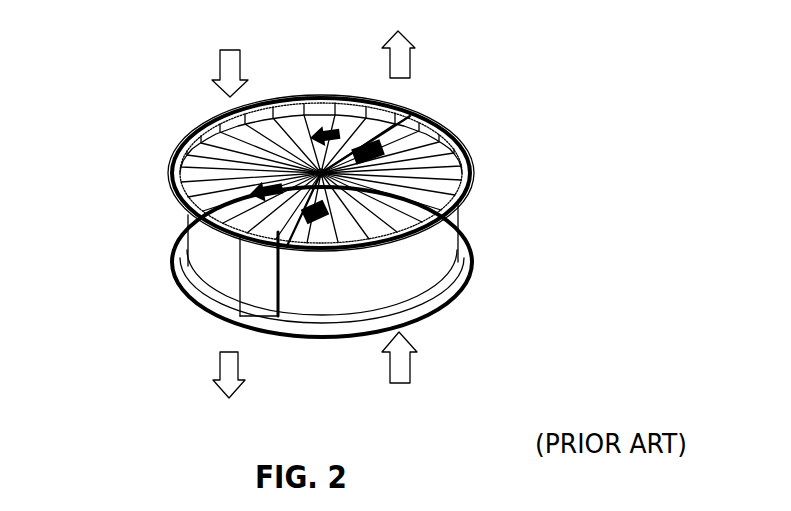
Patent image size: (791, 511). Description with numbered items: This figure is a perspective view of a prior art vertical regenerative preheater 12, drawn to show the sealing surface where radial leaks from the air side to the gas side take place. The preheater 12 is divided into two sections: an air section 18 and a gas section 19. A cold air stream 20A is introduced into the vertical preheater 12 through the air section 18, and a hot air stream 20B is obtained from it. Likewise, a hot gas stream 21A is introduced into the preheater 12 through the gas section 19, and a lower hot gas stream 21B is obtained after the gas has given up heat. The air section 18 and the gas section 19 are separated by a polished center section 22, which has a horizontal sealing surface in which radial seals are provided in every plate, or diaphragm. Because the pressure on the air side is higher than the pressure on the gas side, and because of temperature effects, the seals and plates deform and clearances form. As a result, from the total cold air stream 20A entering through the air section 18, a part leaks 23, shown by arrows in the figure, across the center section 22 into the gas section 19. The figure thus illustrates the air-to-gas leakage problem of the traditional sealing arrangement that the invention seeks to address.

The vertical preheater 12 is at (319, 214).
The air section 18 is at (357, 213).
The gas section 19 is at (252, 163).
The polished center section 22 is at (403, 120).
The leaks 23 is at (387, 152).
The cold air stream 20A is at (416, 358).
The hot air stream 20B is at (416, 57).
The hot gas stream 21A is at (247, 73).
The lower hot gas stream 21B is at (247, 375).